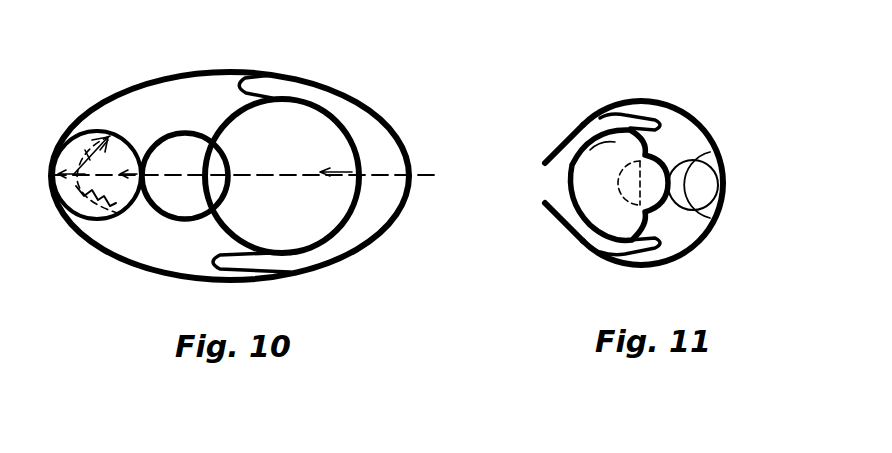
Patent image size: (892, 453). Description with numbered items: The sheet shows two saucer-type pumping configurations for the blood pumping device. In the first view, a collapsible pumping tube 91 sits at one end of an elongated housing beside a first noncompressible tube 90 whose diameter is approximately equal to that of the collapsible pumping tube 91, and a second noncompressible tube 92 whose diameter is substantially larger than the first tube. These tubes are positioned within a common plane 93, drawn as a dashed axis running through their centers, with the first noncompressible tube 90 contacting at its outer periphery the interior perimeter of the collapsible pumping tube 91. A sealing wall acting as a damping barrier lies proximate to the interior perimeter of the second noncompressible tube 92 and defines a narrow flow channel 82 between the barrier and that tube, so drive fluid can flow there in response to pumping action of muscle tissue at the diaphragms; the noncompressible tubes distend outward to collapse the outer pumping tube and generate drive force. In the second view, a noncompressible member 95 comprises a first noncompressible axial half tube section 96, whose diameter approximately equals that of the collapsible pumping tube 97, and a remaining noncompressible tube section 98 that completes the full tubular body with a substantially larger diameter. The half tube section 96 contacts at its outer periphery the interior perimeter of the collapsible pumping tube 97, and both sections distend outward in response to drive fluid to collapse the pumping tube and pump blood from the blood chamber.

In FIG. 10, the narrow flow channel 82 is at (347, 112).
In FIG. 10, the first noncompressible tube 90 is at (180, 132).
In FIG. 10, the collapsible pumping tube 91 is at (91, 132).
In FIG. 10, the second noncompressible tube 92 is at (236, 113).
In FIG. 10, the common plane 93 is at (262, 180).
In FIG. 11, the noncompressible member 95 is at (652, 158).
In FIG. 11, the first noncompressible axial half tube section 96 is at (680, 158).
In FIG. 11, the collapsible pumping tube 97 is at (712, 153).
In FIG. 11, the remaining noncompressible tube section 98 is at (630, 128).